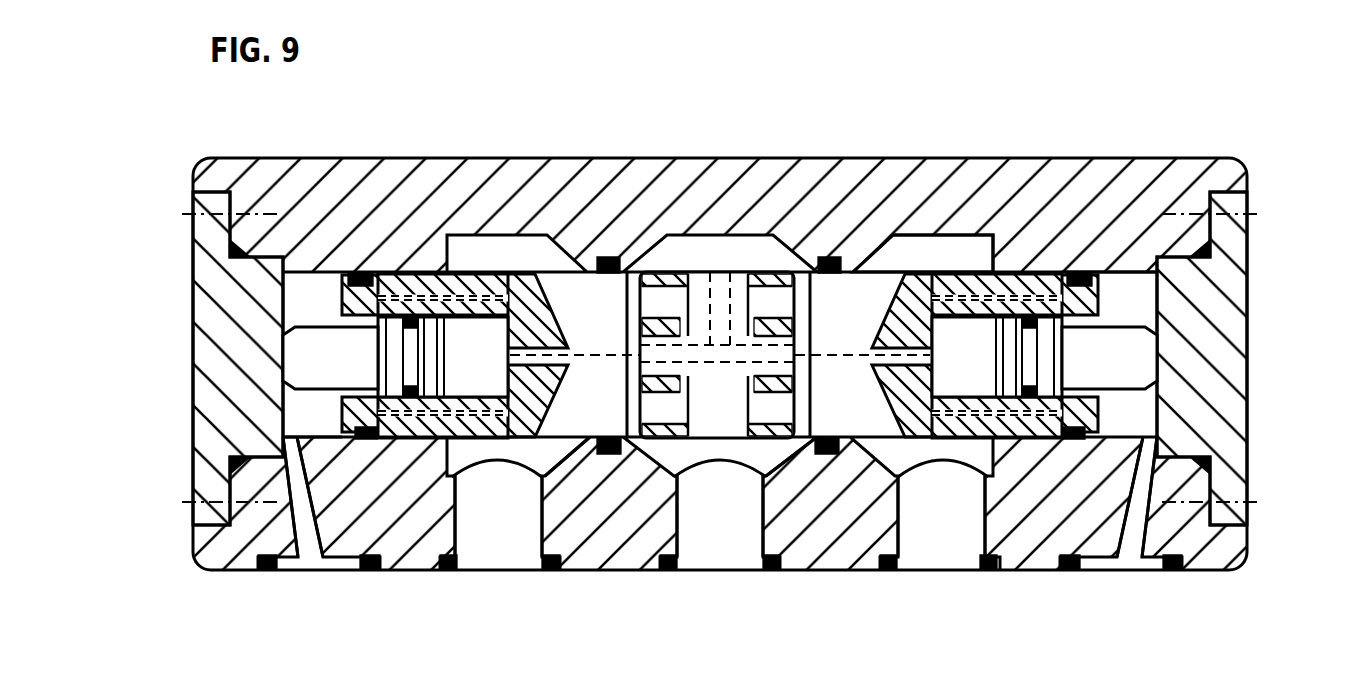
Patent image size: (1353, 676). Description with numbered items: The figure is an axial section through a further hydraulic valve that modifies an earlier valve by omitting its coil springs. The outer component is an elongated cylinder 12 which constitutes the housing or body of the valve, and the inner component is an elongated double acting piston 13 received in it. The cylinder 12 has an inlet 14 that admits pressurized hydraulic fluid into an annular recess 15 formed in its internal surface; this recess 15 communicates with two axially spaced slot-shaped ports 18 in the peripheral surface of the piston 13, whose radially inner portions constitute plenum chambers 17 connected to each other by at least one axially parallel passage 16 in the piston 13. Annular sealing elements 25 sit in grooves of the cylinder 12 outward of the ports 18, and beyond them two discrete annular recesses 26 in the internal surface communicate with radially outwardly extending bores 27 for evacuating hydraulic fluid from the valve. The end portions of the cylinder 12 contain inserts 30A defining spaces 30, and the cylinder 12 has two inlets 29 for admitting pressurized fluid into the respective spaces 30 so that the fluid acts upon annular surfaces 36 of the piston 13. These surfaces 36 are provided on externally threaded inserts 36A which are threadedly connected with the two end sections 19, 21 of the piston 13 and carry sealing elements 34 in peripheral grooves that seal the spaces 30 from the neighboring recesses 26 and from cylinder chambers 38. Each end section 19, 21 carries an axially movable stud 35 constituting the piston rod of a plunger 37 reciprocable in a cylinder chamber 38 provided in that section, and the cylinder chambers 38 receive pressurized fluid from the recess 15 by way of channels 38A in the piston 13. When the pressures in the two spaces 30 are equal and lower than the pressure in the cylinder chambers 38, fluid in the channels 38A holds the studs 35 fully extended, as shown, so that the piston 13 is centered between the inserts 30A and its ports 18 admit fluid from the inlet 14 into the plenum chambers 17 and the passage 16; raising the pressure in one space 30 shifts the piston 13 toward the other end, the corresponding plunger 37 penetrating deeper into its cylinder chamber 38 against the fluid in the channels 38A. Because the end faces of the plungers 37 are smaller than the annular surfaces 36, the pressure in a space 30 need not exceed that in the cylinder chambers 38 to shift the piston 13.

The cylinder 12 is at (877, 190).
The piston 13 is at (1092, 272).
The inlet 14 is at (710, 533).
The annular recess 15 is at (775, 455).
The passage 16 is at (752, 392).
The plenum chamber 17 is at (627, 300).
The port 18 is at (628, 437).
The end section 19 is at (580, 342).
The end section 21 is at (825, 342).
The annular sealing element 25 is at (606, 260).
The annular recess 26 is at (933, 253).
The bore 27 is at (500, 537).
The inlet 29 is at (313, 537).
The space 30 is at (297, 429).
The insert 30A is at (215, 352).
The sealing element 34 is at (368, 272).
The stud 35 is at (319, 375).
The annular surface 36 is at (340, 304).
The externally threaded insert 36A is at (350, 278).
The plunger 37 is at (442, 341).
The cylinder chamber 38 is at (465, 385).
The channel 38A is at (700, 360).